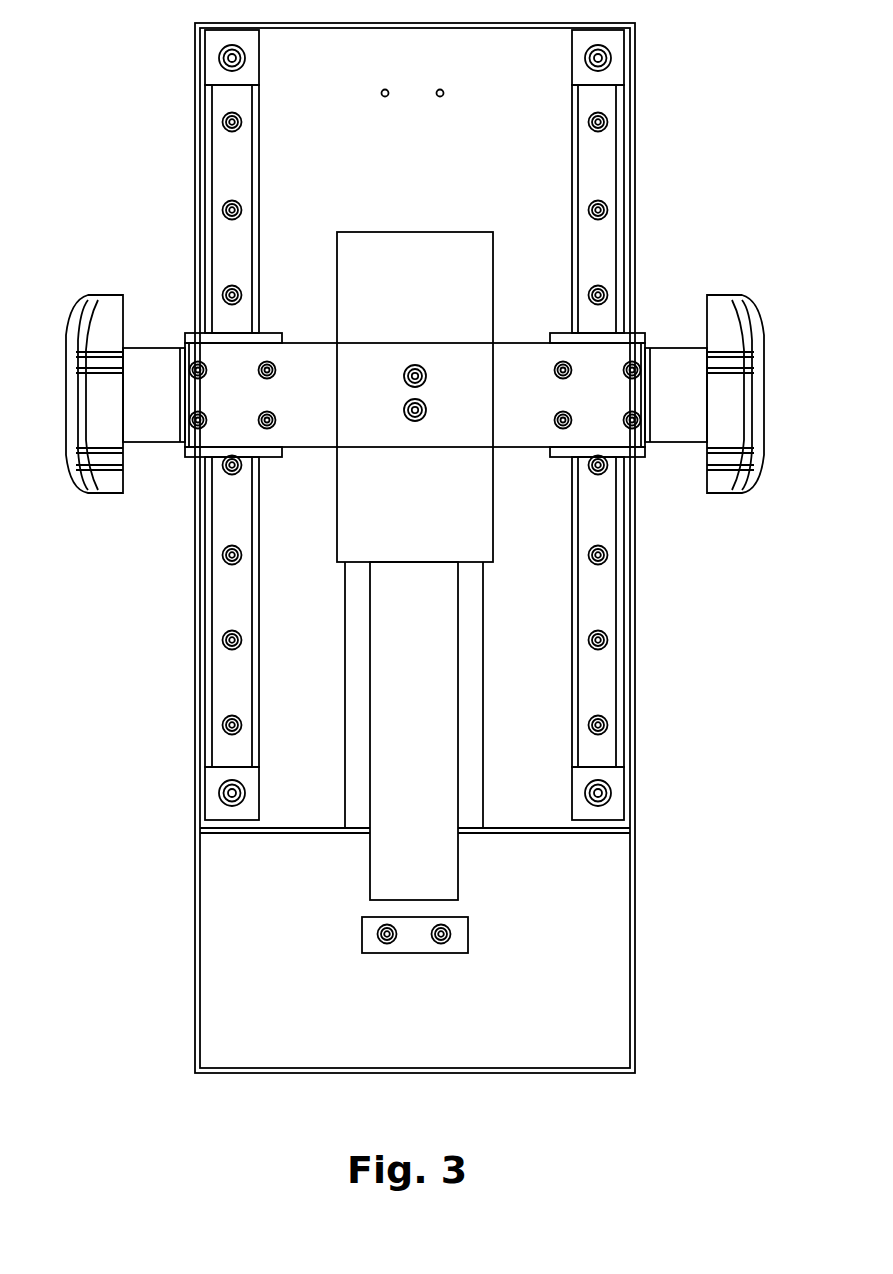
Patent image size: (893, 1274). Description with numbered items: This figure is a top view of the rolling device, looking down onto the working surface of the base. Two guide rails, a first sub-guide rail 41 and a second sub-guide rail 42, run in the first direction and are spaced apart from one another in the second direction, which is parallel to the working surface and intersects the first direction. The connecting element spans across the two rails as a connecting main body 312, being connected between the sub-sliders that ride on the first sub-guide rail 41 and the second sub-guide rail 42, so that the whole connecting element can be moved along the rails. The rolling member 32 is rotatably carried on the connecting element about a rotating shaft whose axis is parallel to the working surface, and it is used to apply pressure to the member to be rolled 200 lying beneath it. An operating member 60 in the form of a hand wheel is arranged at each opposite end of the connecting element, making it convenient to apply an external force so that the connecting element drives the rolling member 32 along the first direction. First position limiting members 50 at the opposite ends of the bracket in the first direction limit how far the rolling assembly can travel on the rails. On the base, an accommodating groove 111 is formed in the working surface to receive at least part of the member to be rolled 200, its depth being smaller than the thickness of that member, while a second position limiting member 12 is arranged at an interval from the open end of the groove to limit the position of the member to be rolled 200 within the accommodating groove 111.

The second position limiting member 12 is at (415, 940).
The rolling member 32 is at (410, 248).
The first sub-guide rail 41 is at (228, 153).
The second sub-guide rail 42 is at (605, 158).
The first position limiting member 50 is at (220, 790).
The operating member 60 is at (108, 302).
The accommodating groove 111 is at (352, 818).
The member to be rolled 200 is at (443, 852).
The connecting main body 312 is at (327, 430).